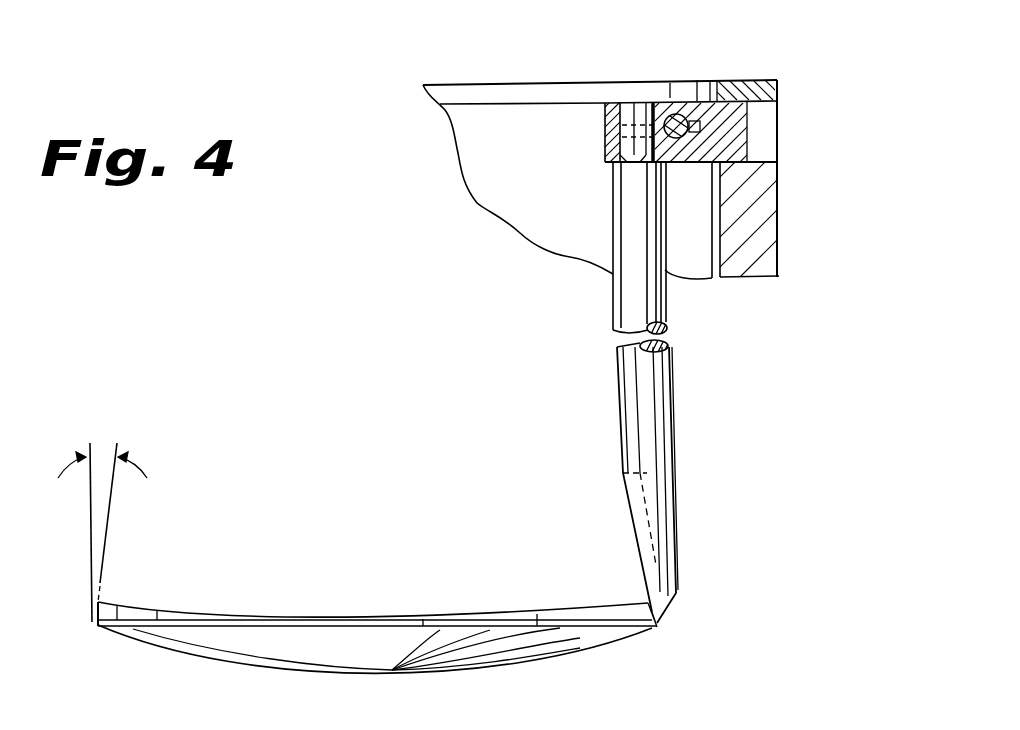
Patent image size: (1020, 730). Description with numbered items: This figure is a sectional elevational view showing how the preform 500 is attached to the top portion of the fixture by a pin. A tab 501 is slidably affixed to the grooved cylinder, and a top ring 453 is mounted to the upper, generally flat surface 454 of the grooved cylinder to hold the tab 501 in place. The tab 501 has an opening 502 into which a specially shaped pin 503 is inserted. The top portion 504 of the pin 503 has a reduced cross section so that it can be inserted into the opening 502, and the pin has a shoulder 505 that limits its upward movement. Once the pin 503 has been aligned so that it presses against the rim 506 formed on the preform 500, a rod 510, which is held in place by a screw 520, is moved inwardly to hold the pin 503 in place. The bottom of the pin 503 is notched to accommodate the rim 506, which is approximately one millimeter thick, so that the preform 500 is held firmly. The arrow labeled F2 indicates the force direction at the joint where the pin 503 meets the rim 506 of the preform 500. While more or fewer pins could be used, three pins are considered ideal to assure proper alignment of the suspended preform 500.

The upper generally flat surface 454 is at (507, 104).
The top ring 453 is at (757, 78).
The tab 501 is at (740, 118).
The rod 510 is at (610, 128).
The top portion of the pin 504 is at (646, 103).
The shoulder 505 is at (622, 165).
The screw 520 is at (672, 140).
The opening 502 is at (640, 150).
The pin 503 is at (627, 408).
The rim 506 is at (622, 625).
The preform 500 is at (212, 662).
The force F2 is at (690, 618).